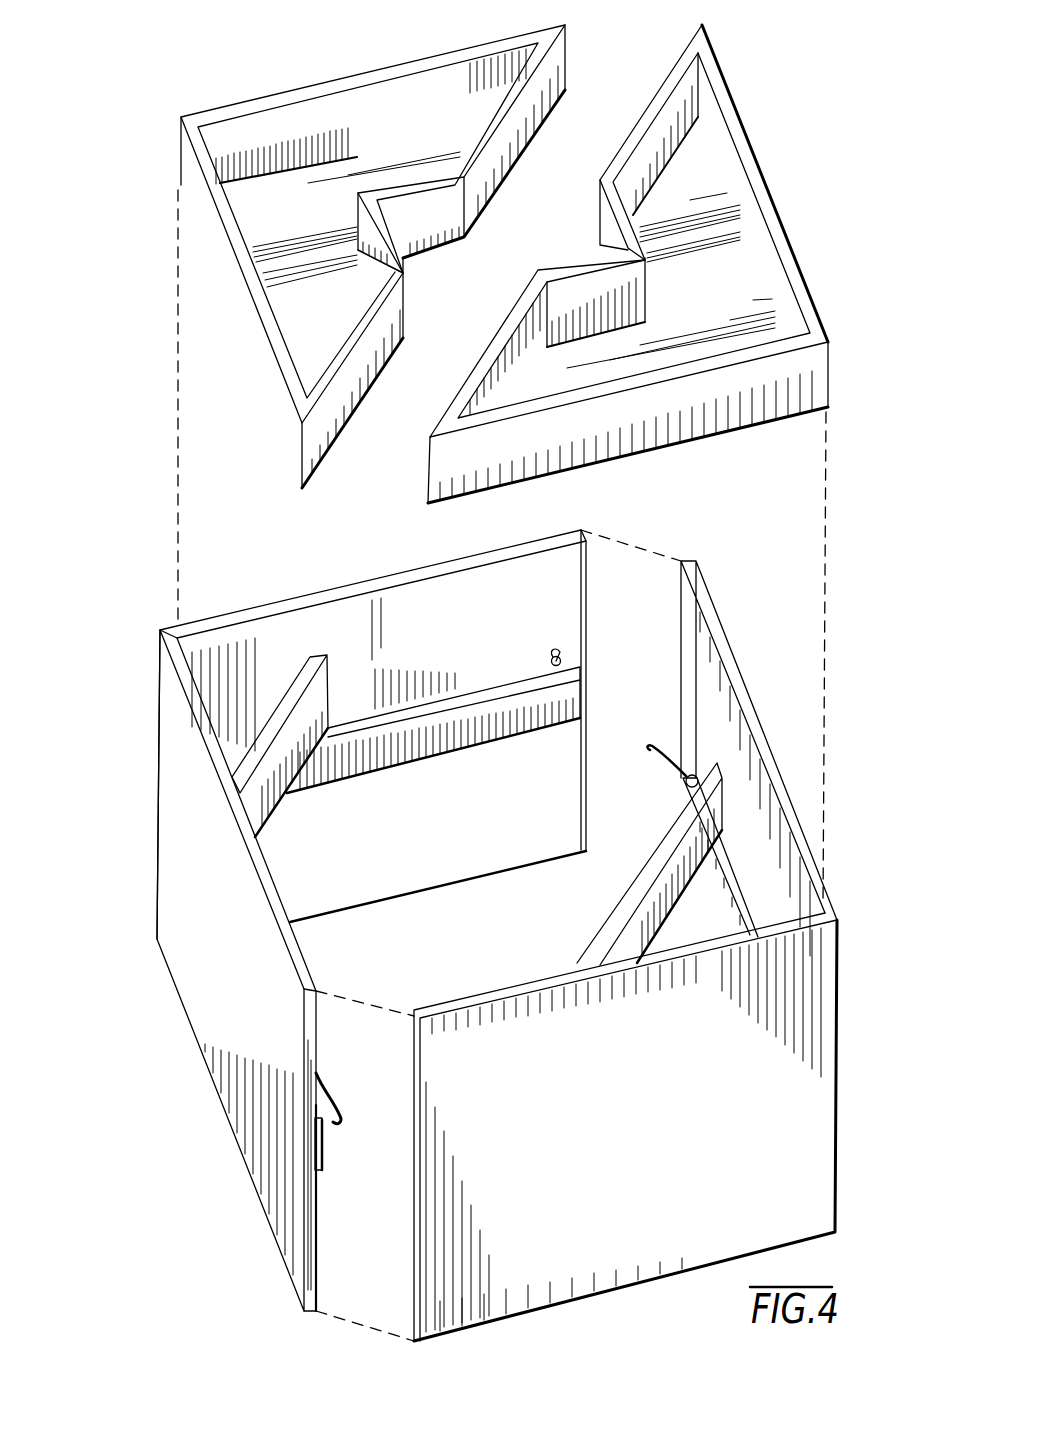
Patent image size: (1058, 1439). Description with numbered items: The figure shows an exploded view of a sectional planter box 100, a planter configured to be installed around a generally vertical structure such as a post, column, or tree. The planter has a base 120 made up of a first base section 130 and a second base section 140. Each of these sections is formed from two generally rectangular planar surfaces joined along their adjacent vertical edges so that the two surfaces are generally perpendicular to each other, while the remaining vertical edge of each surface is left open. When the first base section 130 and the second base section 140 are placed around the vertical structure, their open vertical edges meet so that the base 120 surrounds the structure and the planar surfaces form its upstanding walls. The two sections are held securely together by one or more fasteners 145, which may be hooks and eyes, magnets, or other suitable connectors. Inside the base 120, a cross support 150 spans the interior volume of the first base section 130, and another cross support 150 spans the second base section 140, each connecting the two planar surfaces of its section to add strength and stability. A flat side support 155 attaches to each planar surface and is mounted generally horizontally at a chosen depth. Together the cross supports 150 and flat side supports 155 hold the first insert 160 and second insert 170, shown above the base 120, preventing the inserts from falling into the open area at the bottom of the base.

The sectional planter box 100 is at (218, 62).
The base 120 is at (157, 631).
The first base section 130 is at (177, 806).
The second base section 140 is at (609, 1272).
The fasteners 145 is at (693, 780).
The cross support 150 is at (268, 731).
The flat side support 155 is at (526, 672).
The first insert 160 is at (207, 112).
The second insert 170 is at (720, 87).